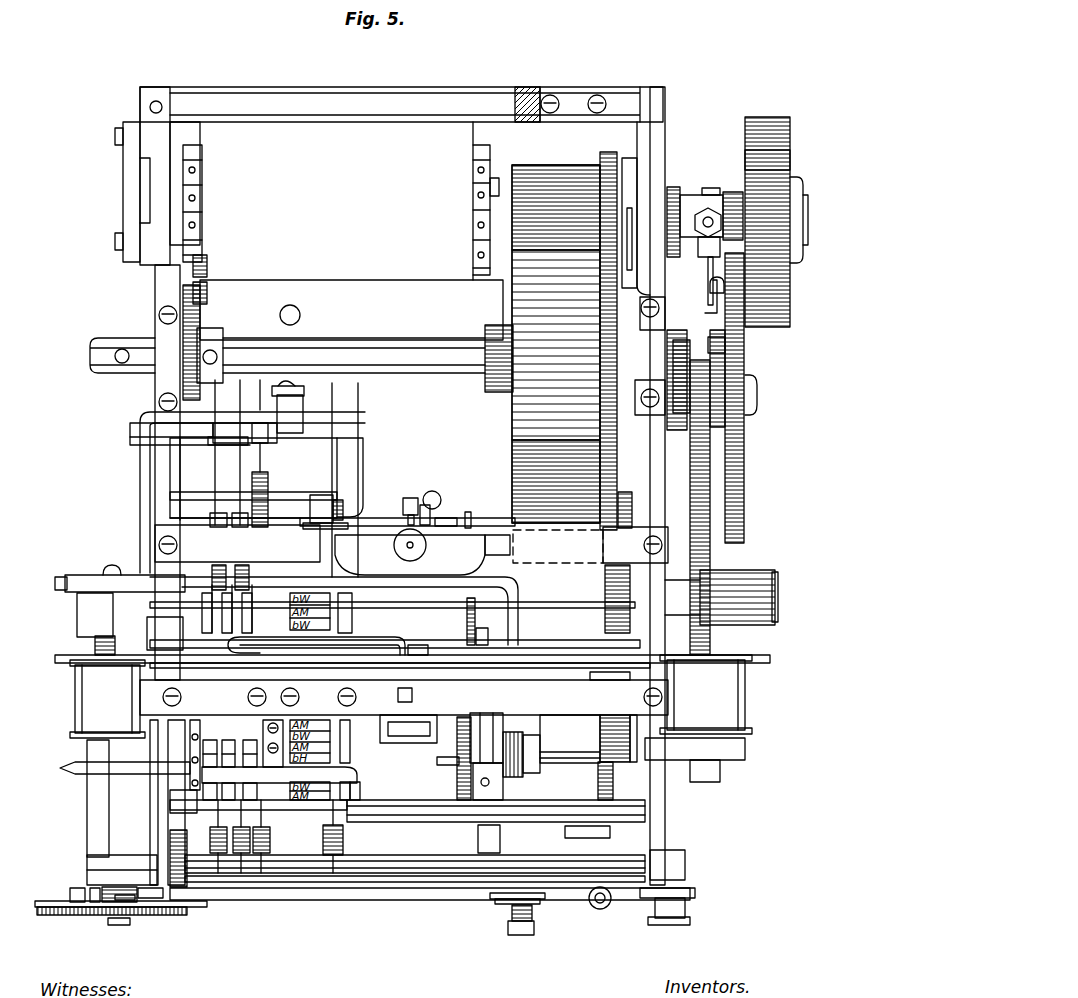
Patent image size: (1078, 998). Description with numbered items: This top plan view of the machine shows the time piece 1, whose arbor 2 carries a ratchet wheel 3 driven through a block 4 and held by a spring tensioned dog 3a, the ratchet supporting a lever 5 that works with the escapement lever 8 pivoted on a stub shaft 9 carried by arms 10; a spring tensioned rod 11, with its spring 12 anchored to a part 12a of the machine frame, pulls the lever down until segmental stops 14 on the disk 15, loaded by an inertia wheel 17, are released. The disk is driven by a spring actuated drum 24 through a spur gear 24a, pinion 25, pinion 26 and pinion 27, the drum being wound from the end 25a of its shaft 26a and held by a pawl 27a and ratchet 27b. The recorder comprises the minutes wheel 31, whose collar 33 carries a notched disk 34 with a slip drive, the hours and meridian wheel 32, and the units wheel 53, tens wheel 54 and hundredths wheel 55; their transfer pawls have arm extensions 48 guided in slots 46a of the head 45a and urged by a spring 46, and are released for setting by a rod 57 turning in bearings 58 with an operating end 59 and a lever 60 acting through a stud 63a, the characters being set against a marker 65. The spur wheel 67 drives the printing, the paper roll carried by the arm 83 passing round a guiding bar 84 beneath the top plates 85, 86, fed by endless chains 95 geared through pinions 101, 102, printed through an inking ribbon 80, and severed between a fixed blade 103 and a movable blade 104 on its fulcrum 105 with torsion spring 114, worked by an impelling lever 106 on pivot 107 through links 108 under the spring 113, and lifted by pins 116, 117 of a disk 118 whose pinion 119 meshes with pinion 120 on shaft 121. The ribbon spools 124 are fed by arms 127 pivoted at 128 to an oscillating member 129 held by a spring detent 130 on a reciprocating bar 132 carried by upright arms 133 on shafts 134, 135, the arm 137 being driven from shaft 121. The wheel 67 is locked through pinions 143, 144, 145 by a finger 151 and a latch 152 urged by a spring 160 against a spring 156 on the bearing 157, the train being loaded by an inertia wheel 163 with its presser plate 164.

The time piece 1 is at (422, 552).
The arbor 2 is at (445, 518).
The ratchet wheel 3 is at (470, 516).
The spring tensioned dog 3a is at (402, 500).
The block 4 is at (410, 497).
The lever 5 is at (365, 520).
The escapement lever 8 is at (477, 628).
The stub shaft 9 is at (485, 742).
The arms 10 is at (445, 758).
The spring tensioned rod 11 is at (520, 622).
The spring 12 is at (440, 496).
The part of the machine frame 12a is at (425, 505).
The segmental stops 14 is at (468, 715).
The disk 15 is at (520, 726).
The inertia wheel 17 is at (608, 680).
The spring actuated drum 24 is at (556, 344).
The spur gear 24a is at (600, 368).
The pinion 25 is at (605, 588).
The end of shaft 25a is at (108, 342).
The pinion 26 is at (625, 494).
The shaft 26a is at (392, 332).
The pinion 27 is at (640, 717).
The pawl 27a is at (207, 294).
The ratchet 27b is at (202, 330).
The minutes wheel 31 is at (360, 790).
The hours and meridian wheel 32 is at (302, 800).
The collar 33 is at (437, 728).
The notched disk 34 is at (440, 750).
The head 45a is at (200, 437).
The spring 46 is at (232, 568).
The slots 46a is at (215, 445).
The arm extension 48 is at (215, 505).
The units wheel 53 is at (253, 751).
The tens wheel 54 is at (279, 781).
The hundredths wheel 55 is at (190, 752).
The rod 57 is at (150, 500).
The bearings 58 is at (130, 428).
The operating end 59 is at (78, 773).
The lever 60 is at (226, 412).
The stud 63a is at (270, 440).
The marker 65 is at (276, 836).
The spur wheel 67 is at (712, 562).
The inking ribbon 80 is at (75, 705).
The arm 83 is at (530, 92).
The guiding bar 84 is at (412, 124).
The top plate 85 is at (390, 292).
The top plate 86 is at (496, 825).
The endless chains 95 is at (170, 795).
The pinion 101 is at (598, 782).
The pinion 102 is at (587, 841).
The fixed blade 103 is at (295, 895).
The movable blade 104 is at (365, 883).
The fulcrum 105 is at (533, 922).
The impelling lever 106 is at (640, 900).
The pivot 107 is at (686, 908).
The links 108 is at (500, 904).
The spring 113 is at (597, 910).
The torsion spring 114 is at (518, 935).
The pin 116 is at (72, 890).
The pin 117 is at (92, 888).
The disk 118 is at (116, 926).
The pinion 119 is at (165, 916).
The pinion 120 is at (50, 915).
The shaft 121 is at (88, 805).
The spools 124 is at (75, 663).
The arms 127 is at (298, 673).
The pivot 128 is at (391, 690).
The oscillating member 129 is at (418, 656).
The spring detent 130 is at (382, 633).
The reciprocating bar 132 is at (418, 642).
The upright arms 133 is at (215, 668).
The shaft 134 is at (590, 545).
The shaft 135 is at (170, 600).
The arm 137 is at (108, 580).
The pinion 143 is at (752, 384).
The pinion 144 is at (745, 462).
The pinion 145 is at (735, 192).
The finger 151 is at (740, 344).
The latch 152 is at (708, 272).
The spring 156 is at (715, 242).
The bearing 157 is at (688, 198).
The spring 160 is at (710, 292).
The inertia wheel 163 is at (772, 120).
The presser plate 164 is at (767, 158).